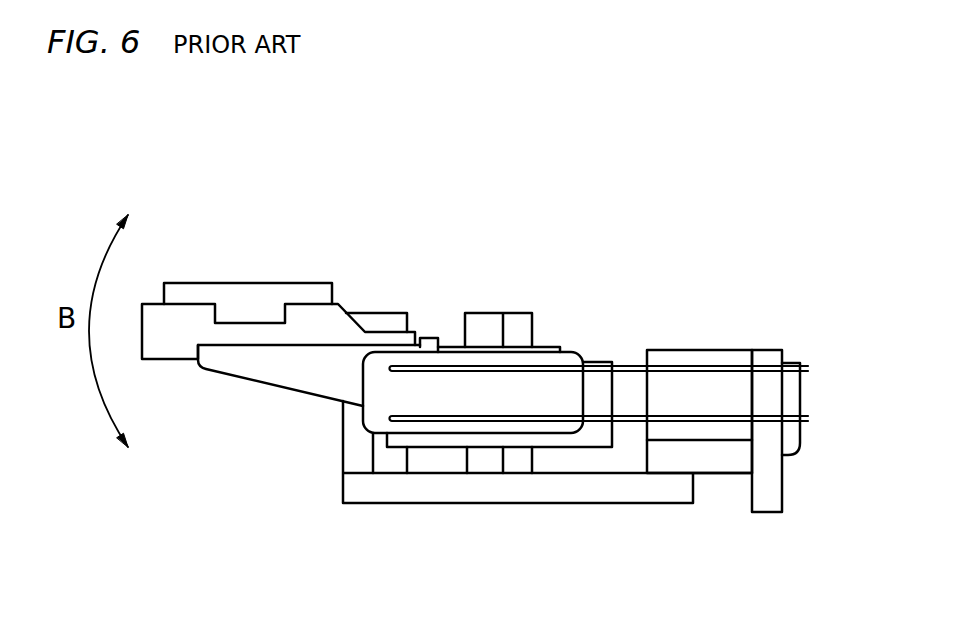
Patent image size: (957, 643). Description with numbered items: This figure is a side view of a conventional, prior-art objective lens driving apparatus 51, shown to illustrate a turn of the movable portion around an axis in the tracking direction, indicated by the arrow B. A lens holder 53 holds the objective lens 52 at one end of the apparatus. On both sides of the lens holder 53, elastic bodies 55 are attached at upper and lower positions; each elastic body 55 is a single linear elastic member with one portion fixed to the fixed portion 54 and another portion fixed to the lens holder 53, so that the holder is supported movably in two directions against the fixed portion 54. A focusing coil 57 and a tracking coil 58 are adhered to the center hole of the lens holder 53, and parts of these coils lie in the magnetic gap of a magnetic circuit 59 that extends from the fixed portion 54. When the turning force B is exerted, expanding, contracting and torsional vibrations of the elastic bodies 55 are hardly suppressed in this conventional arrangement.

The objective lens driving apparatus 51 is at (448, 273).
The objective lens 52 is at (245, 298).
The lens holder 53 is at (185, 318).
The fixed portion 54 is at (462, 490).
The elastic body 55 is at (635, 368).
The focusing coil 57 is at (552, 340).
The tracking coil 58 is at (428, 343).
The magnetic circuit 59 is at (371, 328).